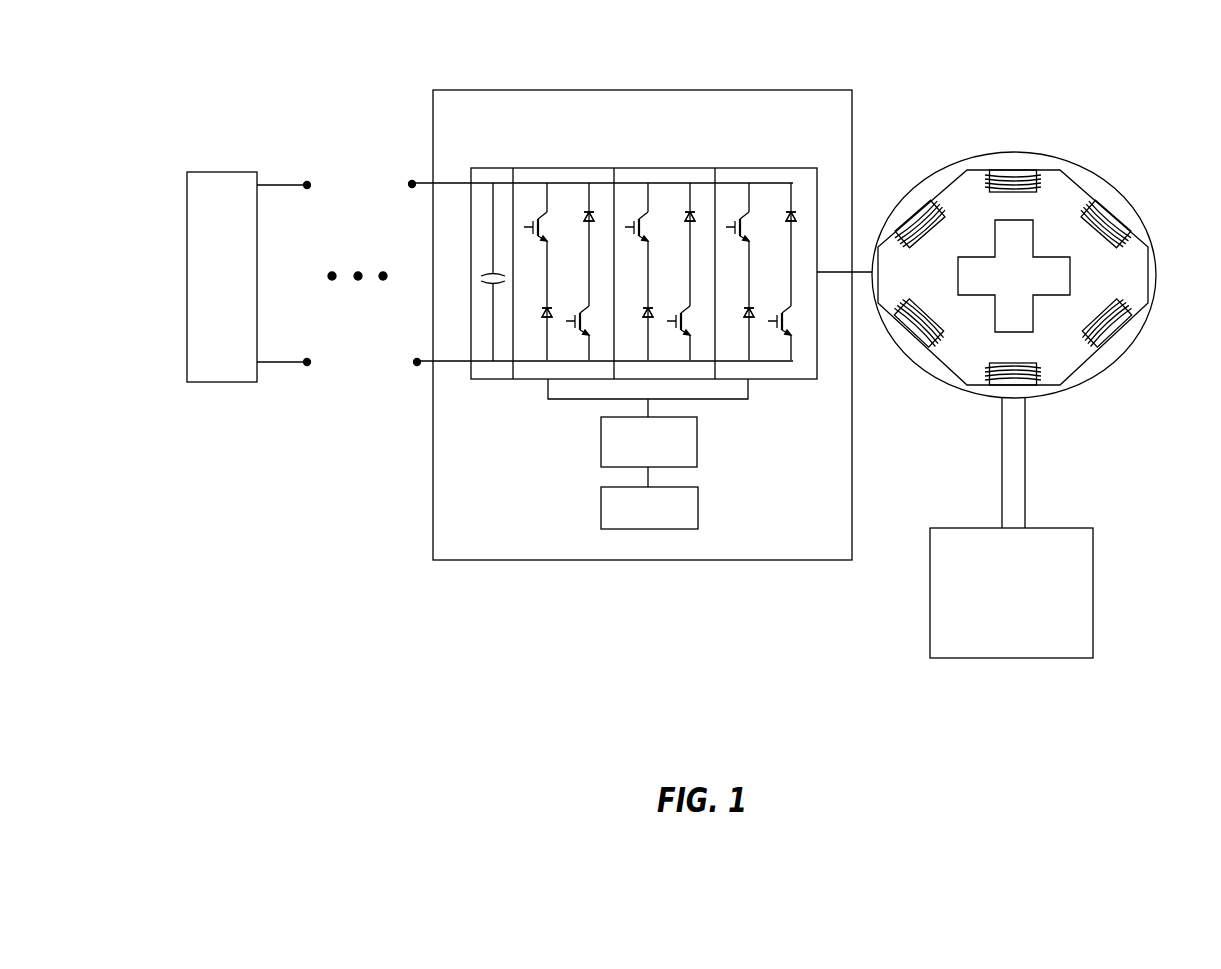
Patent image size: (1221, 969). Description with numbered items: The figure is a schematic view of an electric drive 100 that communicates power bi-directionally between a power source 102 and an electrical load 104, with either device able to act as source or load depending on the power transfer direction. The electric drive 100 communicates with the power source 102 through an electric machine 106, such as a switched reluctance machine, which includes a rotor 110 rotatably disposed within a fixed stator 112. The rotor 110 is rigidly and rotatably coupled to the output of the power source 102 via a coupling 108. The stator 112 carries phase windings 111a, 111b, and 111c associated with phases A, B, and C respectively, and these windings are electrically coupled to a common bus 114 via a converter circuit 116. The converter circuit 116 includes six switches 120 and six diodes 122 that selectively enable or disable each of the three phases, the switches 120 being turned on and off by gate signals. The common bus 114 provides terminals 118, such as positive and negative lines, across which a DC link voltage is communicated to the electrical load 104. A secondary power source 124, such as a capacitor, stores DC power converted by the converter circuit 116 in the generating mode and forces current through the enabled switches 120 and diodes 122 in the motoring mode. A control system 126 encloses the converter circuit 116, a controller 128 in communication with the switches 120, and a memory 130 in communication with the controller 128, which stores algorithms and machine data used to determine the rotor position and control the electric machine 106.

The electric drive 100 is at (848, 50).
The power source 102 is at (1052, 527).
The electrical load 104 is at (222, 171).
The electric machine 106 is at (978, 150).
The coupling 108 is at (1000, 487).
The rotor 110 is at (1033, 232).
The phase windings (phase A) 111a is at (1022, 175).
The phase windings (phase B) 111b is at (1117, 222).
The phase windings (phase C) 111c is at (914, 222).
The stator 112 is at (955, 168).
The common bus 114 is at (295, 378).
The converter circuit 116 is at (549, 167).
The terminals 118 is at (411, 181).
The switches 120 is at (546, 212).
The diodes 122 is at (587, 211).
The secondary power source 124 is at (491, 273).
The control system 126 is at (523, 561).
The controller 128 is at (697, 440).
The memory 130 is at (698, 508).